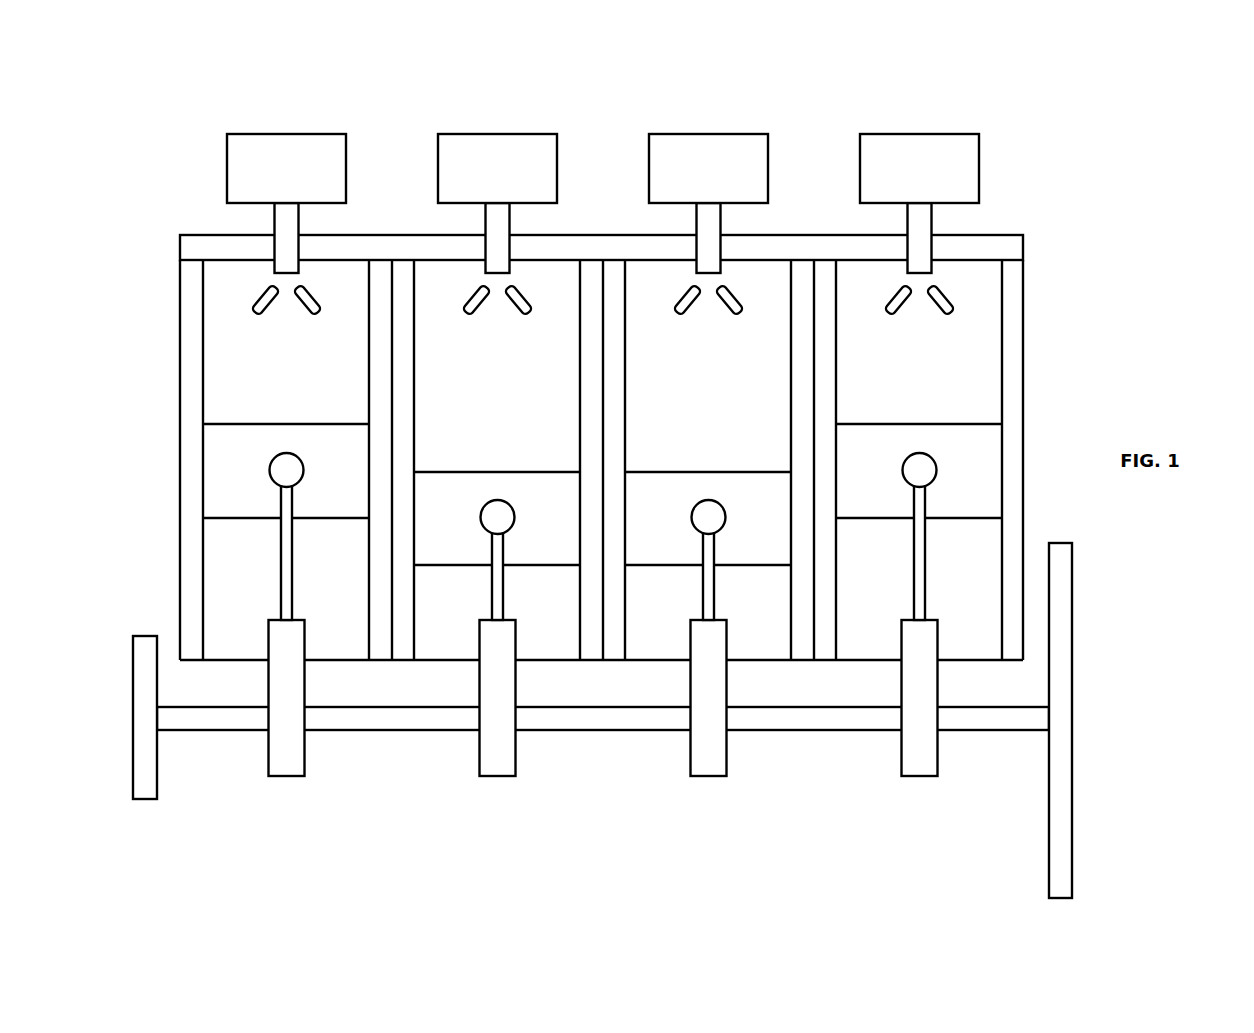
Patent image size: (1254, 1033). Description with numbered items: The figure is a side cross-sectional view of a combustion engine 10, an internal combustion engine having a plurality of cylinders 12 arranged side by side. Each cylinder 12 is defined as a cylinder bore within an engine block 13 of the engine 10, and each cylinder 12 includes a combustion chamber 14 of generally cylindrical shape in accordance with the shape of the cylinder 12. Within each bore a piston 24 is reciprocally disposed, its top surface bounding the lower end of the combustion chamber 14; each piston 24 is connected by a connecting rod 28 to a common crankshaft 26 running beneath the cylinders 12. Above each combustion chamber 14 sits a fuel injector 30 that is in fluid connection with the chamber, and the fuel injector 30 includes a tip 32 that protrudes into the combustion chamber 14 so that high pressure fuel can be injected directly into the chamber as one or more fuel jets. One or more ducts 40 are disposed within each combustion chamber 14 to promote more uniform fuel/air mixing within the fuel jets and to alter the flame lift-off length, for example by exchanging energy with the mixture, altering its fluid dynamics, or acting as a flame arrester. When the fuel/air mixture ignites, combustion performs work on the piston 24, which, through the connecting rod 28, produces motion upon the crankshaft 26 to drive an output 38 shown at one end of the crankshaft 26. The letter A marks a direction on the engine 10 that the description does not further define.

The combustion engine 10 is at (1033, 137).
The cylinder 12 is at (278, 283).
The engine block 13 is at (1007, 236).
The combustion chamber 14 is at (266, 377).
The piston 24 is at (232, 497).
The crankshaft 26 is at (465, 735).
The connecting rod 28 is at (303, 620).
The fuel injector 30 is at (273, 133).
The tip 32 is at (307, 278).
The output 38 is at (1073, 708).
The duct 40 is at (252, 330).
The flow direction arrow A is at (172, 518).